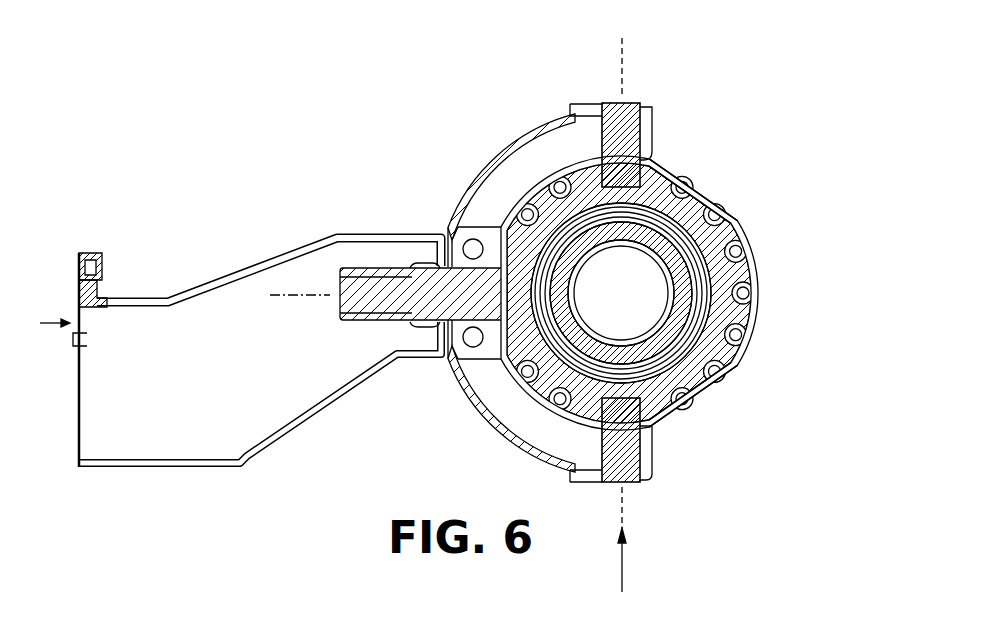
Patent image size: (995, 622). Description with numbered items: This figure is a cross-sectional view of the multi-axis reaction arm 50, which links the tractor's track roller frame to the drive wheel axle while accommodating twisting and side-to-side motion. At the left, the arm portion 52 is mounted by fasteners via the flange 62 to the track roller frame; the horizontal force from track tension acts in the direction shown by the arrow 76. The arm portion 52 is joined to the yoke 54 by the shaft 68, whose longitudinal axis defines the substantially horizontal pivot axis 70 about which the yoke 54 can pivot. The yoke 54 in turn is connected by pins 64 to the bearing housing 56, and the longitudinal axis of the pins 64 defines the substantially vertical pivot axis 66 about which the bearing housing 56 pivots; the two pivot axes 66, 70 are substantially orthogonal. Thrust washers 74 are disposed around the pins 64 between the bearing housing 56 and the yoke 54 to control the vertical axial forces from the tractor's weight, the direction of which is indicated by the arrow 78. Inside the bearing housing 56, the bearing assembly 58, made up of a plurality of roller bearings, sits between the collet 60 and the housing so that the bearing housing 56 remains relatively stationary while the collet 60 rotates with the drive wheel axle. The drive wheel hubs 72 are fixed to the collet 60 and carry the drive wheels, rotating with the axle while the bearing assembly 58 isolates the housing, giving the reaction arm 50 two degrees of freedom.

The multi-axis reaction arm 50 is at (272, 204).
The arm portion 52 is at (237, 277).
The yoke 54 is at (484, 163).
The bearing housing 56 is at (702, 190).
The bearing assembly 58 is at (706, 256).
The collet 60 is at (750, 333).
The flange 62 is at (88, 253).
The pins 64 is at (650, 153).
The pivot axis 66 is at (622, 62).
The shaft 68 is at (403, 297).
The pivot axis 70 is at (297, 302).
The drive wheel hubs 72 is at (720, 205).
The thrust washers 74 is at (655, 162).
The arrow 76 is at (42, 322).
The arrow 78 is at (622, 562).